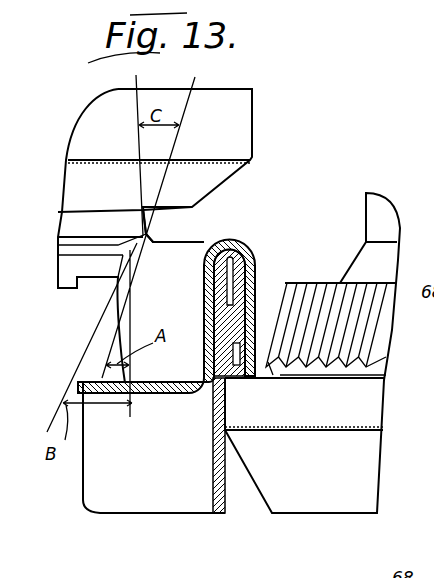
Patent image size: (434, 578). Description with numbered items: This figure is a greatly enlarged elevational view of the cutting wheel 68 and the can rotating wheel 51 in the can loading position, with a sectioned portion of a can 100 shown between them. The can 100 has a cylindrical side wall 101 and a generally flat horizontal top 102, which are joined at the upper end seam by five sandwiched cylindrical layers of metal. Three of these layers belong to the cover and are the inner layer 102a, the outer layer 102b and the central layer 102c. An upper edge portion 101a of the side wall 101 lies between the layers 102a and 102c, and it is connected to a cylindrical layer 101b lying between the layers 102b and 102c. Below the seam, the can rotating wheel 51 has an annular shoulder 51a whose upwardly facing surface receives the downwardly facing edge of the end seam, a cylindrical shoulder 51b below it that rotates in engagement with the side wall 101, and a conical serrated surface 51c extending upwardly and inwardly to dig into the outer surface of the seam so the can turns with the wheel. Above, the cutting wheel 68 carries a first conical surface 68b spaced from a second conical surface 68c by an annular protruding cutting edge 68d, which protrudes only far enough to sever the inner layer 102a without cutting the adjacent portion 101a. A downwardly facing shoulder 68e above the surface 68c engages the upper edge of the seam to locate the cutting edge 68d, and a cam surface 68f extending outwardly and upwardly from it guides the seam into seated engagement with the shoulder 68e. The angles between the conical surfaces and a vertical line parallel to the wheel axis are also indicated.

The cutting wheel 68 is at (254, 84).
The first conical surface 68b is at (77, 288).
The second conical surface 68c is at (128, 232).
The annular protruding cutting edge 68d is at (152, 242).
The downwardly facing shoulder 68e is at (124, 216).
The cam surface 68f is at (215, 183).
The can 100 is at (141, 522).
The cylindrical side wall 101 is at (213, 478).
The upper edge portion of can wall 101a is at (220, 308).
The cylindrical layer of can wall 101b is at (242, 280).
The top 102 is at (147, 392).
The inner layer of cover 102a is at (209, 288).
The outer layer of cover 102b is at (250, 262).
The central layer of cover 102c is at (208, 343).
The can rotating wheel 51 is at (384, 463).
The annular shoulder 51a is at (345, 375).
The cylindrical shoulder 51b is at (310, 420).
The conical serrated surface 51c is at (303, 378).